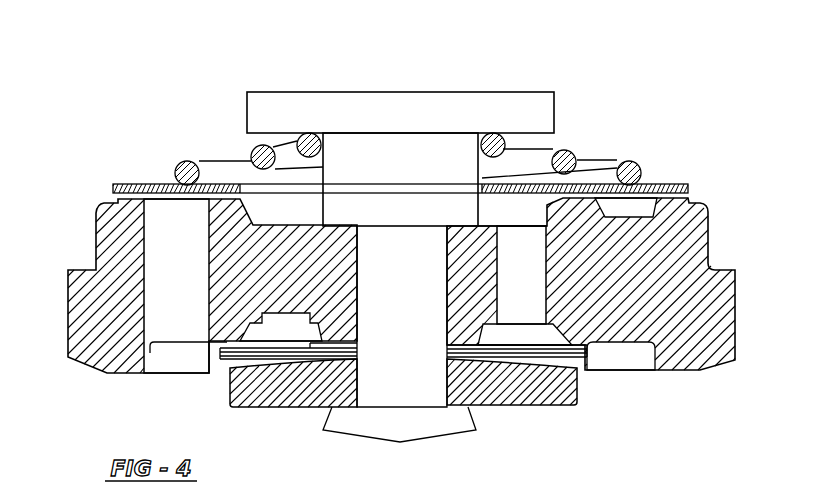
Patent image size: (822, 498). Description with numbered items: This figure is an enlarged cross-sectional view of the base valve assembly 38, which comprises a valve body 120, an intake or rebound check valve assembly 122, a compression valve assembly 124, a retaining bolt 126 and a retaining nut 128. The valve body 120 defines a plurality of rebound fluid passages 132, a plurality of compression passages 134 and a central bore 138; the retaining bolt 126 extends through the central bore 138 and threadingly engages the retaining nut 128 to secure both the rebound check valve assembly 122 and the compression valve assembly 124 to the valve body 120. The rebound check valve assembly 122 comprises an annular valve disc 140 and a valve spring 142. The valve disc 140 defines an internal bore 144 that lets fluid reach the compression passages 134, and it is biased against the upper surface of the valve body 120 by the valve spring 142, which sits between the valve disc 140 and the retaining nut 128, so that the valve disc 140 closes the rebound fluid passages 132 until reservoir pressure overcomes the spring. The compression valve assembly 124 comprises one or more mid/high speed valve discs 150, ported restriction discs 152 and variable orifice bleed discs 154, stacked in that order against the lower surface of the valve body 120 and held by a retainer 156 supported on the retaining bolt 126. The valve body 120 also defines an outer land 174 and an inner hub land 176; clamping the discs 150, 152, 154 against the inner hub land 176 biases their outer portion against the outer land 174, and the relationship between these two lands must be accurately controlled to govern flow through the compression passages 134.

The base valve assembly 38 is at (650, 82).
The rebound check valve assembly 122 is at (684, 135).
The valve body 120 is at (707, 303).
The compression valve assembly 124 is at (213, 391).
The retaining bolt 126 is at (382, 345).
The retaining nut 128 is at (388, 196).
The rebound fluid passages 132 is at (168, 256).
The compression passages 134 is at (525, 268).
The central bore 138 is at (357, 247).
The valve disc 140 is at (113, 184).
The valve spring 142 is at (187, 161).
The internal bore 144 is at (243, 190).
The mid/high speed valve disc 150 is at (590, 350).
The ported restriction disc 152 is at (572, 353).
The variable orifice bleed disc 154 is at (503, 355).
The retainer 156 is at (563, 392).
The outer land 174 is at (227, 343).
The inner hub land 176 is at (328, 330).